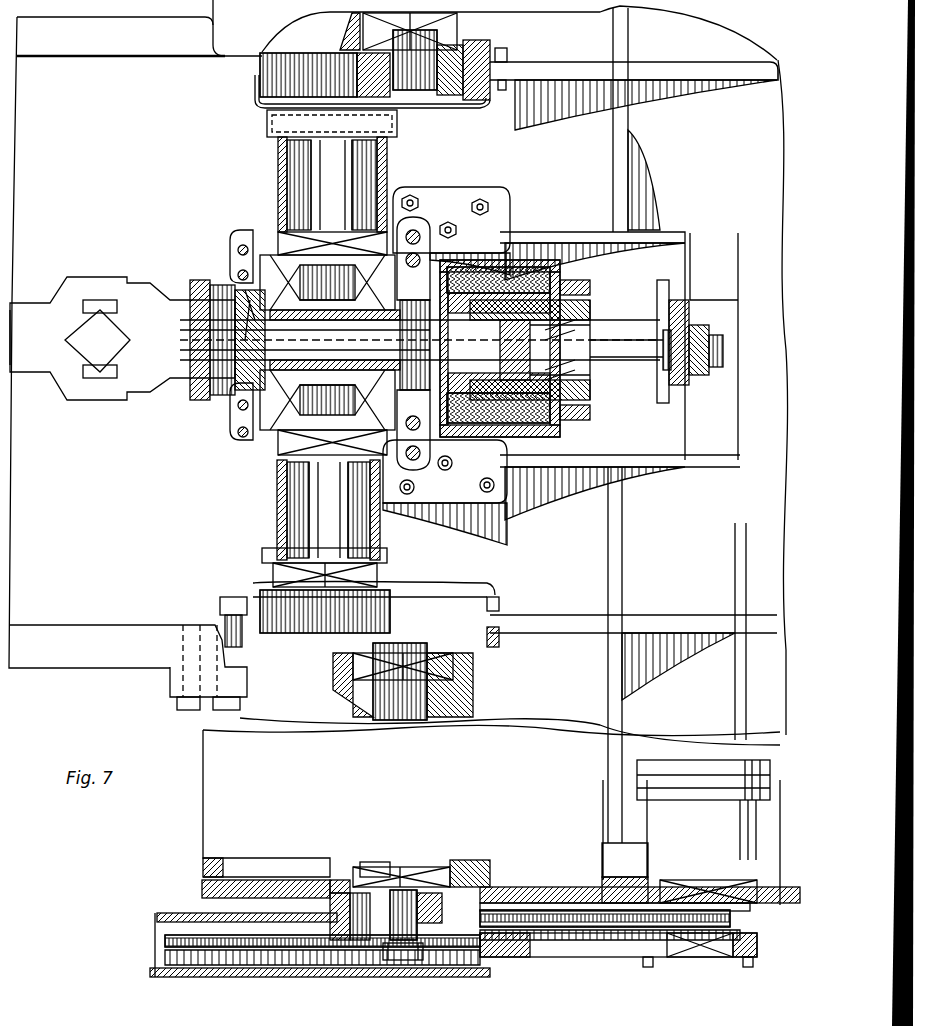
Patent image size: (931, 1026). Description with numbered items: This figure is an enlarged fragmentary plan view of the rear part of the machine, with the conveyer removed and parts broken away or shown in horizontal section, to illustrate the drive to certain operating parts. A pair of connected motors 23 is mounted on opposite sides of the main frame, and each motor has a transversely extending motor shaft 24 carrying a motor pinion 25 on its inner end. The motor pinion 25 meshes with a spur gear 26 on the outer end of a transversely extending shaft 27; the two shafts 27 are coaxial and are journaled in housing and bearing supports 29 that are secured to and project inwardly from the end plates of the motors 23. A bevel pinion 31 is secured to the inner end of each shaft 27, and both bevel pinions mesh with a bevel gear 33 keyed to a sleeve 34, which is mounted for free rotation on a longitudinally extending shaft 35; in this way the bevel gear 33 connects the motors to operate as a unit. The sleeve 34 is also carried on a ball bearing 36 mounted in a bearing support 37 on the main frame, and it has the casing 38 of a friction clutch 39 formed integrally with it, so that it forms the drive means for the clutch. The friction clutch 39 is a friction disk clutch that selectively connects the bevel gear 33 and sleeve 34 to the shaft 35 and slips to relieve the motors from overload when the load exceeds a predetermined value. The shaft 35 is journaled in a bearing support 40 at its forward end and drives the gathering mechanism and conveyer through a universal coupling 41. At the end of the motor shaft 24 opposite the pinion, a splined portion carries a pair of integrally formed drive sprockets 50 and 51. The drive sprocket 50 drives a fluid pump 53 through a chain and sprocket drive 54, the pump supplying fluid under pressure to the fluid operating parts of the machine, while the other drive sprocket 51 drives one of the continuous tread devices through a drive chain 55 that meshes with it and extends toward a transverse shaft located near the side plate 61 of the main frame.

The motor 23 is at (230, 55).
The motor shaft 24 is at (420, 100).
The motor pinion 25 is at (540, 110).
The spur gear 26 is at (262, 85).
The shaft 27 is at (278, 165).
The housing and bearing support 29 is at (395, 150).
The bevel pinion 31 is at (260, 262).
The bevel gear 33 is at (420, 340).
The sleeve 34 is at (327, 343).
The shaft 35 is at (327, 299).
The ball bearing 36 is at (420, 225).
The bearing support 37 is at (430, 228).
The casing 38 is at (520, 262).
The friction clutch 39 is at (555, 262).
The bearing support 40 is at (250, 232).
The universal coupling 41 is at (110, 400).
The drive sprocket 50 is at (370, 875).
The drive sprocket 51 is at (437, 965).
The fluid pump 53 is at (662, 814).
The chain and sprocket drive 54 is at (590, 935).
The drive chain 55 is at (345, 945).
The side plate 61 is at (140, 52).